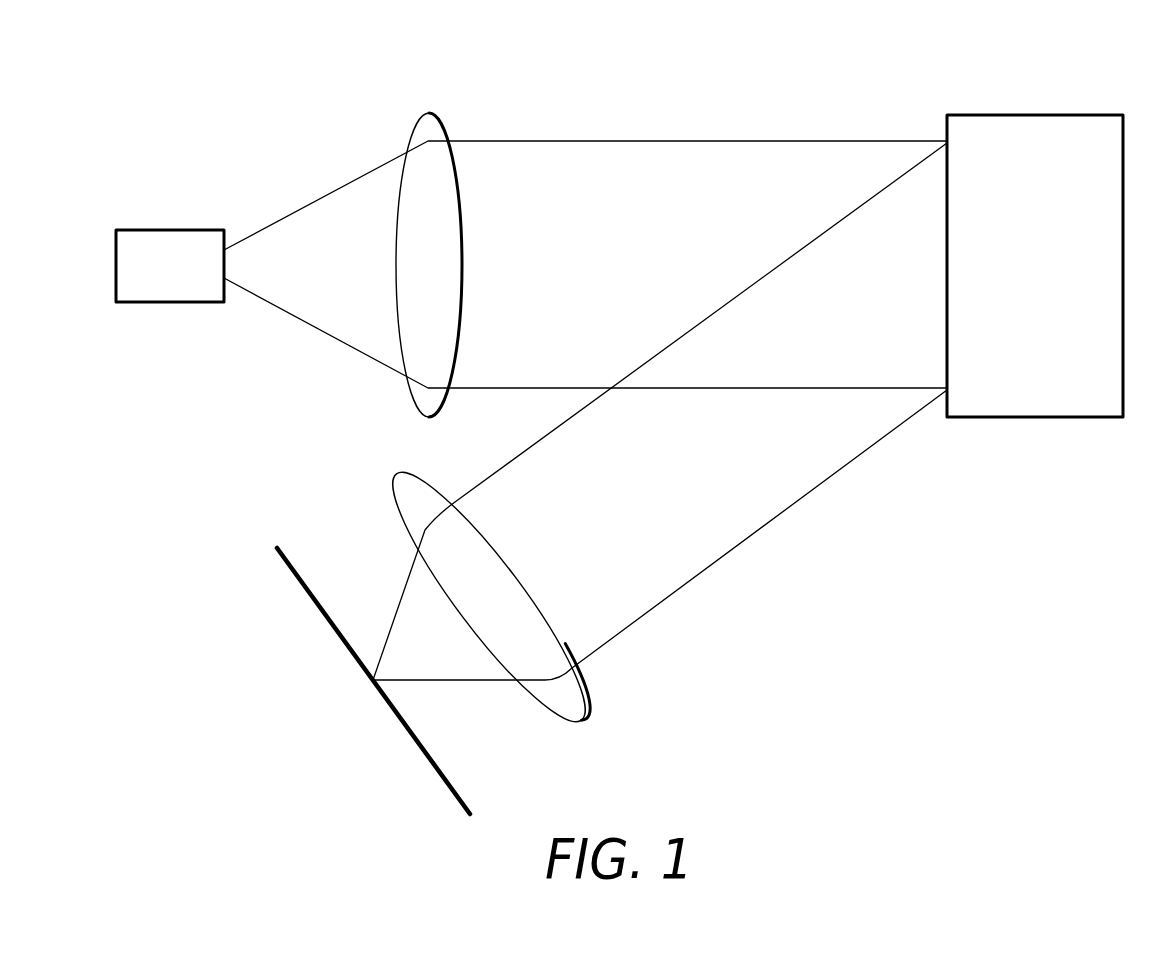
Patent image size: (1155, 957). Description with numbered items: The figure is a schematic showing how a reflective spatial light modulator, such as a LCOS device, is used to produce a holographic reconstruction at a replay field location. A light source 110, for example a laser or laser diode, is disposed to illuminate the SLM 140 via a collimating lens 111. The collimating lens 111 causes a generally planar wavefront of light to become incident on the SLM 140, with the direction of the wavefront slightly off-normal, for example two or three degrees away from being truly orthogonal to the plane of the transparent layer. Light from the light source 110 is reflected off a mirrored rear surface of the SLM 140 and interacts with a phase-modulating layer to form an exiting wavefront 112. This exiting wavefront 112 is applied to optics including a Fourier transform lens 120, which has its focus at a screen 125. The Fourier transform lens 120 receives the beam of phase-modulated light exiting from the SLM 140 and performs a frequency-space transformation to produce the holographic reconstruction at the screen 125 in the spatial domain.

The light source 110 is at (148, 230).
The collimating lens 111 is at (426, 113).
The exiting wavefront 112 is at (795, 503).
The Fourier transform lens 120 is at (582, 722).
The screen 125 is at (297, 585).
The SLM 140 is at (1084, 114).